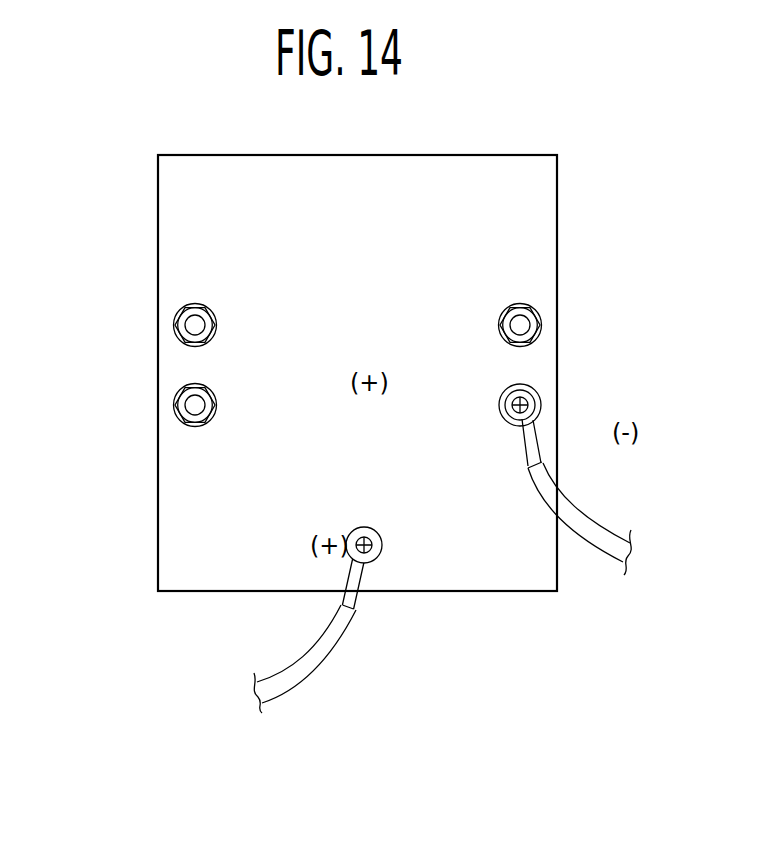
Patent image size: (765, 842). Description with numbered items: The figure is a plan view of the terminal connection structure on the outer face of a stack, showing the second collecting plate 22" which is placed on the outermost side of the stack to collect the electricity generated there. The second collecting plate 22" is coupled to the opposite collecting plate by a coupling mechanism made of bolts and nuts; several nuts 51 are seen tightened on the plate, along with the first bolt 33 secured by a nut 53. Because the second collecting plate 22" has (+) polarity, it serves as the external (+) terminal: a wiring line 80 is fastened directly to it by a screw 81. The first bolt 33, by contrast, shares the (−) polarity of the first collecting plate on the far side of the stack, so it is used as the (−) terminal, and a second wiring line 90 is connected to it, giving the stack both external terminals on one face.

The second collecting plate 22 is at (543, 189).
The nut 51 is at (175, 318).
The first bolt 33 is at (535, 377).
The nut 53 is at (545, 405).
The wiring line 90 is at (582, 520).
The screw 81 is at (373, 556).
The wiring line 80 is at (325, 652).